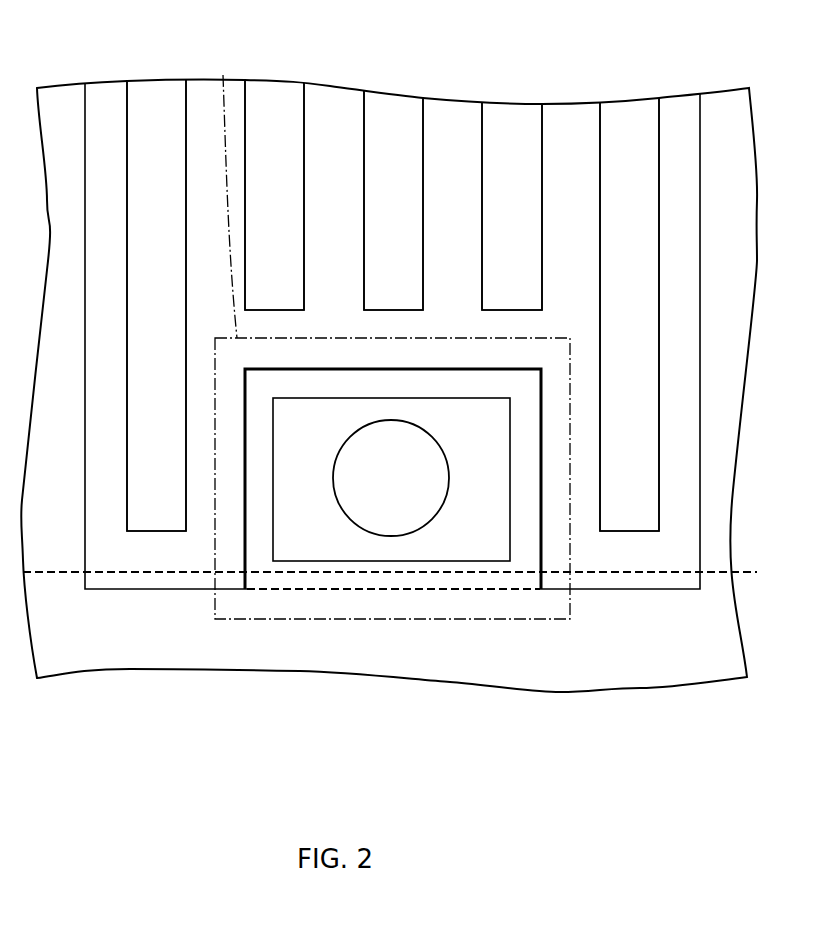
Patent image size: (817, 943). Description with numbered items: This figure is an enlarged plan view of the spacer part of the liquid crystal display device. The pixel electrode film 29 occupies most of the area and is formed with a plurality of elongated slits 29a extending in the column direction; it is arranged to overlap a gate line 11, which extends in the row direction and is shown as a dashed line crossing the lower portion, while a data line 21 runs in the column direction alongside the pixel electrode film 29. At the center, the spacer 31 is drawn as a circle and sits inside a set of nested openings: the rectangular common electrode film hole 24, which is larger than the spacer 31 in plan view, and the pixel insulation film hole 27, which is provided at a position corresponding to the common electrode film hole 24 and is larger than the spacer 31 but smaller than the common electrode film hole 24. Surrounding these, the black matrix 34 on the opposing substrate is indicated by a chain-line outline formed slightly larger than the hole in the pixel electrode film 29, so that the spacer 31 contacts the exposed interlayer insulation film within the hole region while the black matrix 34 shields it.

The gate line 11 is at (728, 628).
The data line 21 is at (155, 90).
The common electrode film hole 24 is at (497, 590).
The pixel insulation film hole 27 is at (320, 560).
The pixel electrode film 29 is at (566, 125).
The slits 29a is at (270, 95).
The spacer 31 is at (385, 490).
The black matrix 34 is at (221, 70).